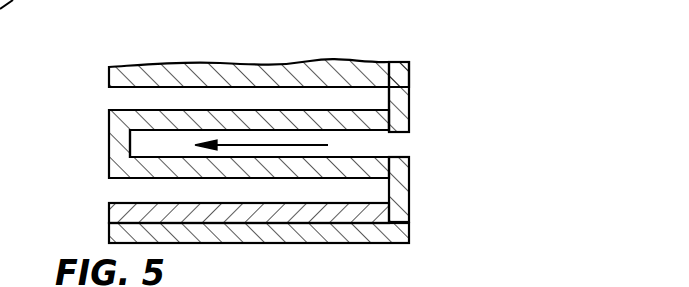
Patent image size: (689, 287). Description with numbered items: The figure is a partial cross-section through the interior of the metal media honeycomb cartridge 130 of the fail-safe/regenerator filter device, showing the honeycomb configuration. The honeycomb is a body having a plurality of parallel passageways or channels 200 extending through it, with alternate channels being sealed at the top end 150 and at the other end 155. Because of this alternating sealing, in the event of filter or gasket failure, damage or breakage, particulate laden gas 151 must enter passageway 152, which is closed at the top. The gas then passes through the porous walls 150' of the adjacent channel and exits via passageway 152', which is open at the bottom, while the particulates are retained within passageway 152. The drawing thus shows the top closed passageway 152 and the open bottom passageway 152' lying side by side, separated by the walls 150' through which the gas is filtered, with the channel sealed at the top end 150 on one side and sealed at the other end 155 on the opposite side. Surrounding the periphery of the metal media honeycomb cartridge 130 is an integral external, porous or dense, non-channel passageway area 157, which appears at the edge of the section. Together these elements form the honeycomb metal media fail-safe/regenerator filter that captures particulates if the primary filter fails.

The parallel passageways or channels 200 is at (324, 98).
The other end 155 is at (409, 87).
The top end 150 is at (210, 144).
The walls 150' is at (432, 142).
The particulate laden gas 151 is at (390, 139).
The passageway 152 is at (312, 151).
The passageway 152' is at (207, 105).
The non-channel passageway area 157 is at (270, 245).
The honeycomb cartridge 130 is at (373, 245).